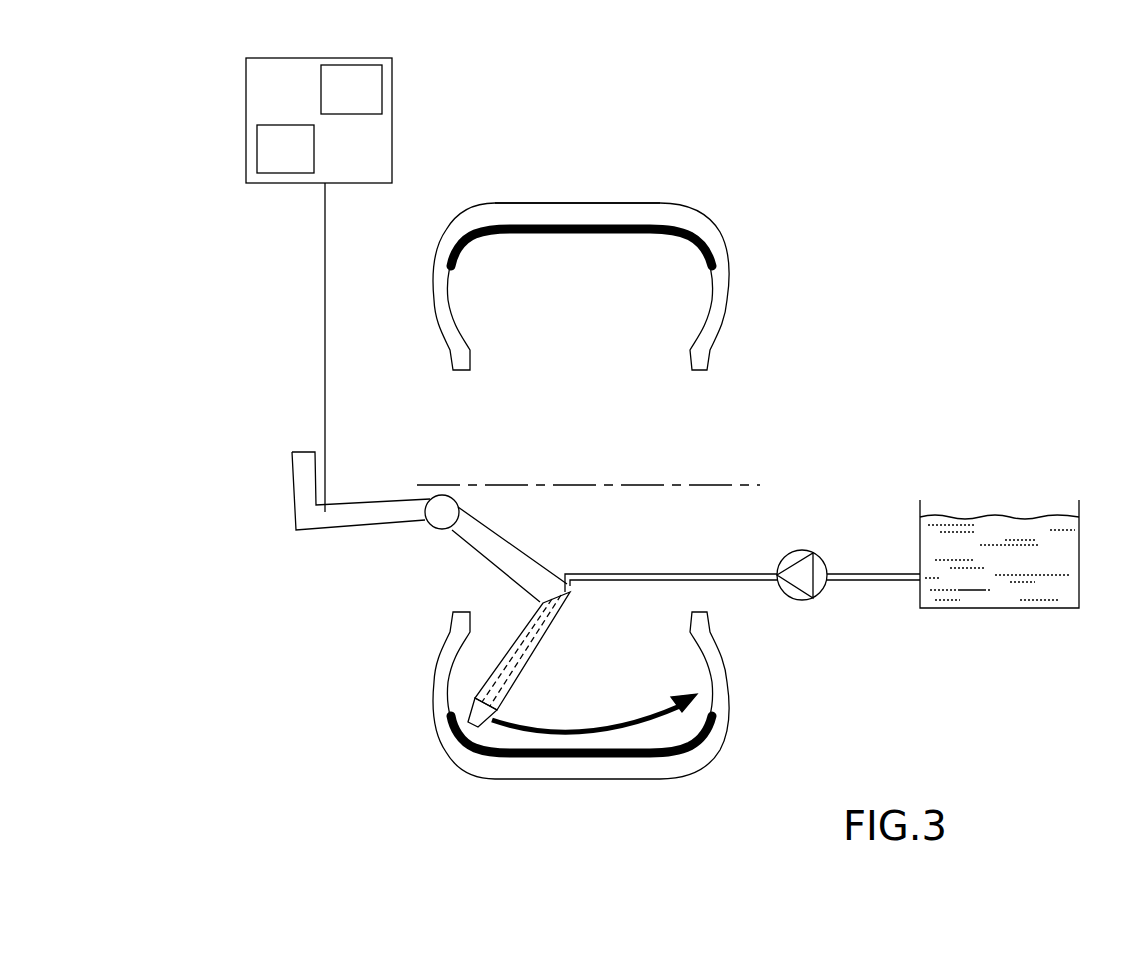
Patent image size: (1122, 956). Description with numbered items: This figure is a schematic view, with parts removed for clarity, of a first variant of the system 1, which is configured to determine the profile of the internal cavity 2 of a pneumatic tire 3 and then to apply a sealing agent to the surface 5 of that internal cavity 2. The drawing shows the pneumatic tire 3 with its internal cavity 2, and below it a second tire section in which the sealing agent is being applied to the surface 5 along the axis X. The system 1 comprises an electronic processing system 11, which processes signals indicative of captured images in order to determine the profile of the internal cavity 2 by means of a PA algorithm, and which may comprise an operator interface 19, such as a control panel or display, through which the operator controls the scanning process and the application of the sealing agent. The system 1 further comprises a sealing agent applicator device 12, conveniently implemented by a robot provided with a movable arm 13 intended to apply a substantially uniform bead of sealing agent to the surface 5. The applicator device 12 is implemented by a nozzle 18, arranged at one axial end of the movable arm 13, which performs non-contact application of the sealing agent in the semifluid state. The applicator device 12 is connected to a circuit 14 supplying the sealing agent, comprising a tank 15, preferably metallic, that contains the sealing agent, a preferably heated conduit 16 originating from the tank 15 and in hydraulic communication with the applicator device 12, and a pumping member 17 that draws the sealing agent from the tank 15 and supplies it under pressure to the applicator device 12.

The system 1 is at (800, 320).
The internal cavity 2 is at (648, 283).
The pneumatic tire 3 is at (585, 213).
The surface 5 is at (457, 308).
The electronic processing system 11 is at (274, 270).
The sealing agent applicator device 12 is at (308, 550).
The arm 13 is at (510, 557).
The circuit 14 is at (921, 482).
The tank 15 is at (975, 597).
The conduit 16 is at (738, 582).
The pumping member 17 is at (792, 598).
The nozzle 18 is at (478, 718).
The operator interface 19 is at (351, 89).
The axis of rotation X is at (730, 483).